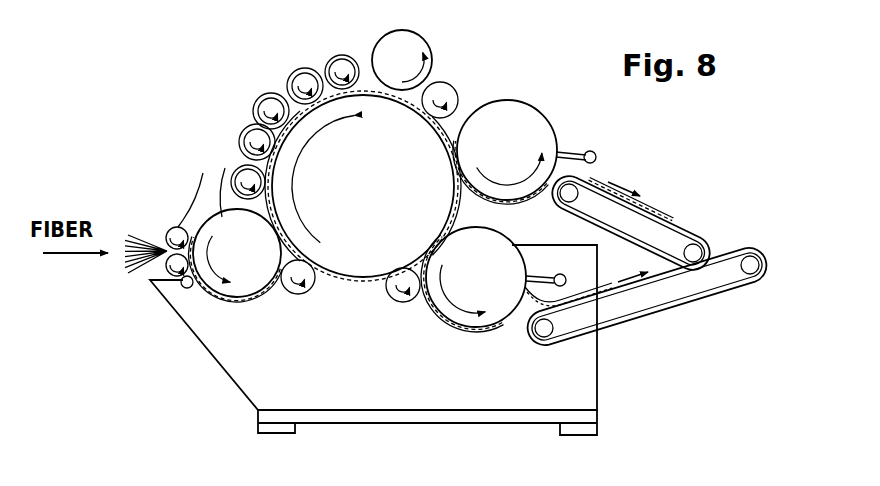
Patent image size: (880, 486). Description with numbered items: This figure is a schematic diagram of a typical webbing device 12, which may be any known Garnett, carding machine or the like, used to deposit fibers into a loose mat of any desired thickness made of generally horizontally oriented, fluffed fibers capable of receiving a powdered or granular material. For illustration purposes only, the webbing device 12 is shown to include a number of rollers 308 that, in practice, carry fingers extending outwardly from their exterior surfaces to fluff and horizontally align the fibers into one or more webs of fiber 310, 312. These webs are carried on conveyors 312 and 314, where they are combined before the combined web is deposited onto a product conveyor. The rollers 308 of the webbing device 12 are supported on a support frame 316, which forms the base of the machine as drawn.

The webbing device 12 is at (470, 70).
The rollers 308 is at (231, 181).
The web of fiber 310 is at (600, 178).
The conveyor 312 is at (677, 223).
The conveyor 314 is at (750, 249).
The support frame 316 is at (590, 370).